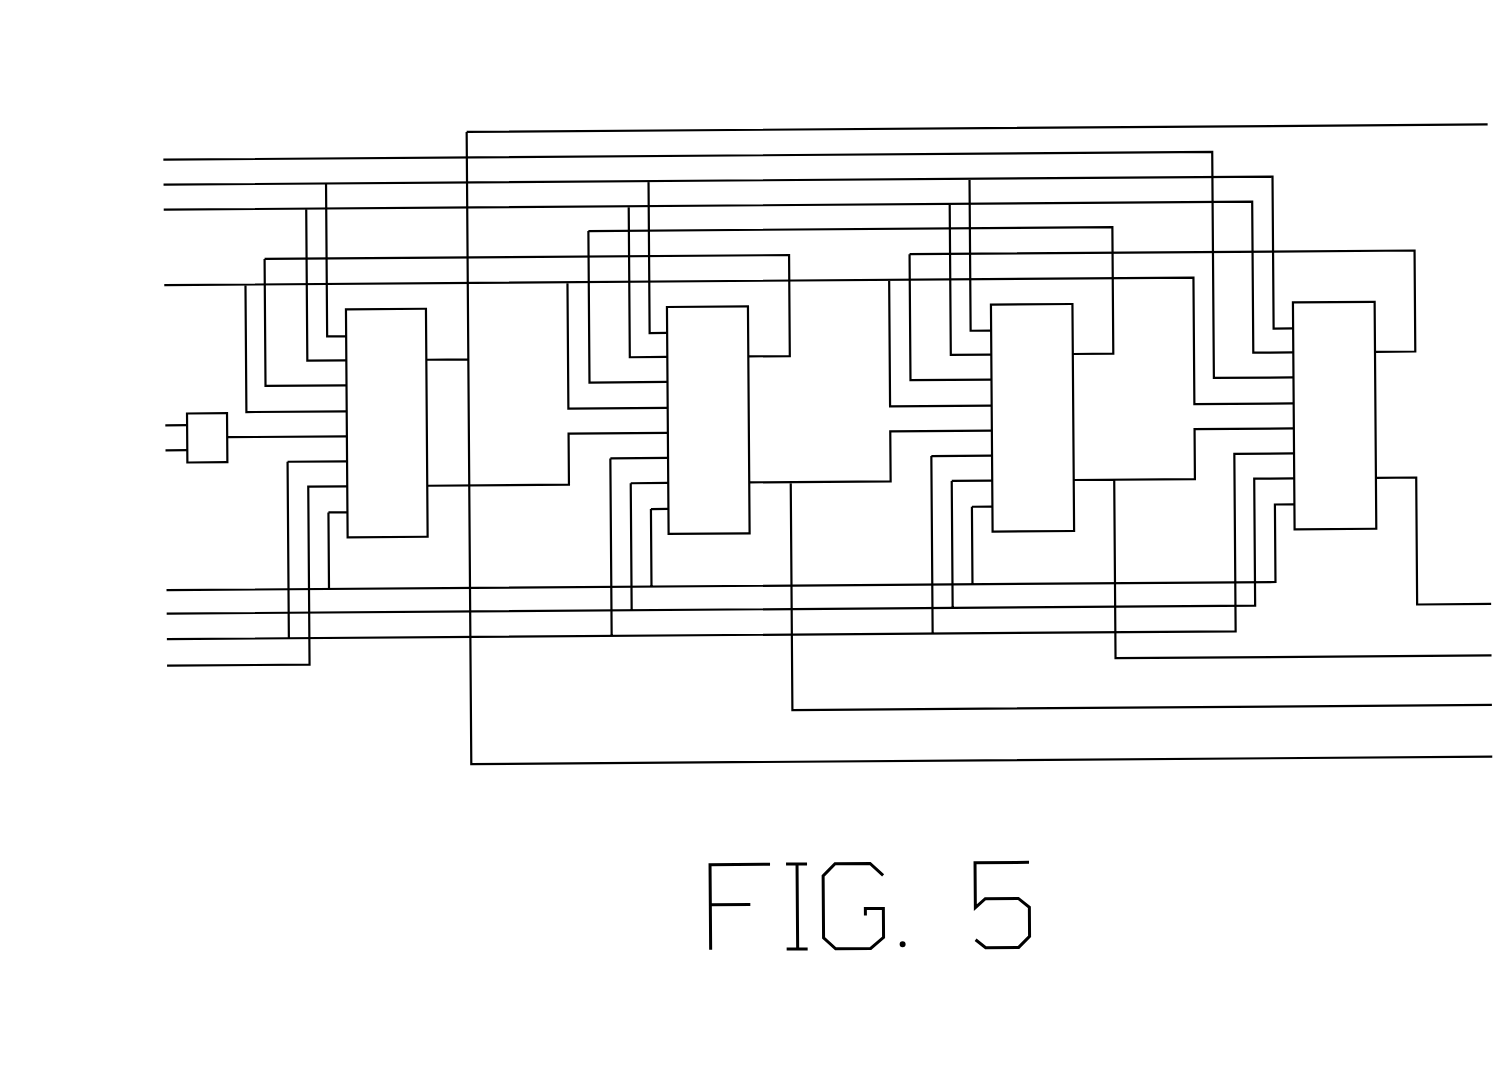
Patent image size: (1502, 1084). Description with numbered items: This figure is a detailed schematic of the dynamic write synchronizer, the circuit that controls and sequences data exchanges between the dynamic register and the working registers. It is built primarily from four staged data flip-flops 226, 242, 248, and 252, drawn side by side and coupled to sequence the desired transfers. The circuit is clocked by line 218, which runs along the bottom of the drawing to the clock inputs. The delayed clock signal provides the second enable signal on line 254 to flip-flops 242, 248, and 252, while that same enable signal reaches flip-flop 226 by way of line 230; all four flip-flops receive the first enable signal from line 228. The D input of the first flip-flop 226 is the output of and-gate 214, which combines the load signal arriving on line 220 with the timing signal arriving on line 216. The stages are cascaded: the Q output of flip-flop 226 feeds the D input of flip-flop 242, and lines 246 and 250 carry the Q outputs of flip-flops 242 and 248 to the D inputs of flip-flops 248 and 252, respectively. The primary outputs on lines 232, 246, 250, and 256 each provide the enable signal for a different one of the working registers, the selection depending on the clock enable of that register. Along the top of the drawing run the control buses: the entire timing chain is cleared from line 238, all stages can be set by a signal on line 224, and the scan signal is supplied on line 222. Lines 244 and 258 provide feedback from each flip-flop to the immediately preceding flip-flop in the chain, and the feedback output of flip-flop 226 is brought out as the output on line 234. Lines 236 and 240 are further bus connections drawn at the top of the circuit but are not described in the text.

The and-gate 214 is at (267, 458).
The line 216 is at (222, 501).
The line 218 is at (727, 547).
The line 220 is at (202, 387).
The line 222 is at (728, 345).
The line 224 is at (729, 281).
The data flip-flop 226 is at (434, 422).
The line 228 is at (731, 569).
The line 230 is at (304, 584).
The line 232 is at (548, 489).
The line 234 is at (959, 444).
The serial data in line 236 is at (728, 242).
The line 238 is at (386, 260).
The clear bus line 240 is at (729, 256).
The data flip-flop 242 is at (764, 420).
The line 244 is at (850, 304).
The line 246 is at (1120, 568).
The data flip-flop 248 is at (1080, 417).
The line 250 is at (1282, 543).
The data flip-flop 252 is at (1383, 415).
The line 254 is at (777, 565).
The line 256 is at (1399, 541).
The line 258 is at (1162, 287).